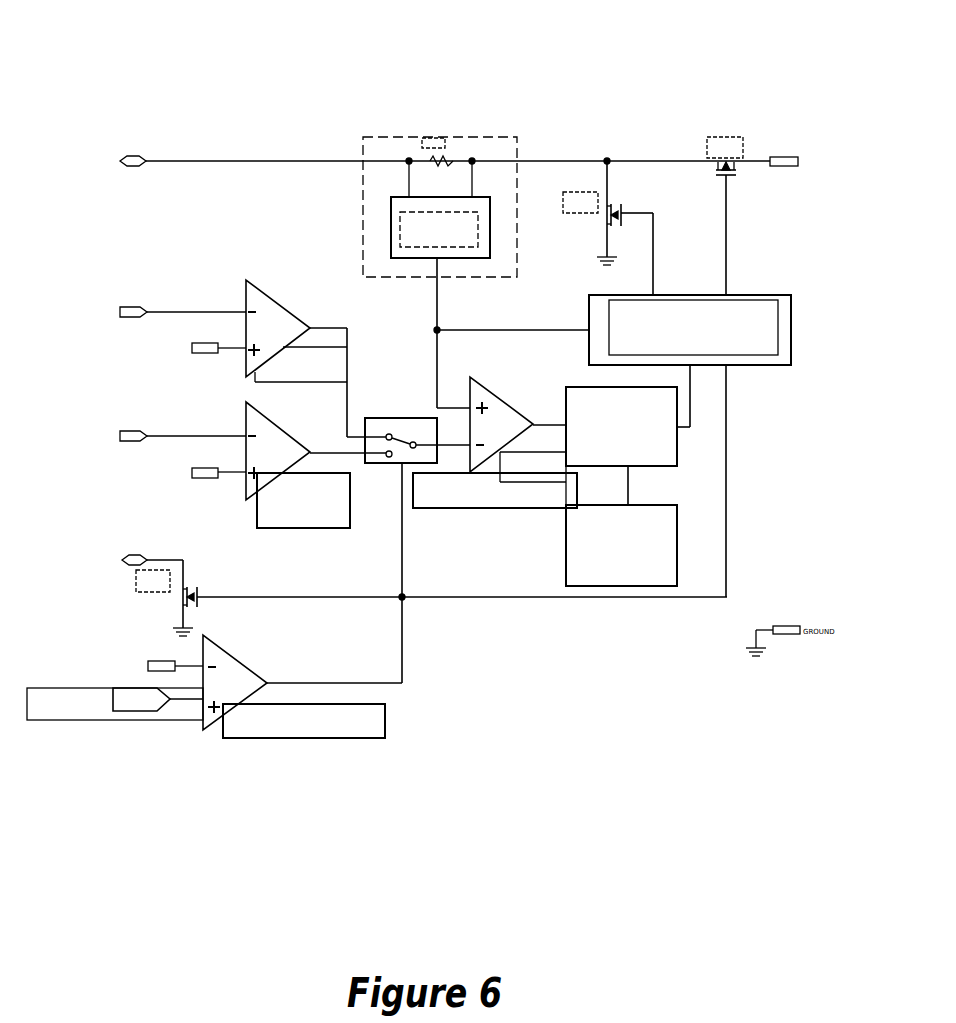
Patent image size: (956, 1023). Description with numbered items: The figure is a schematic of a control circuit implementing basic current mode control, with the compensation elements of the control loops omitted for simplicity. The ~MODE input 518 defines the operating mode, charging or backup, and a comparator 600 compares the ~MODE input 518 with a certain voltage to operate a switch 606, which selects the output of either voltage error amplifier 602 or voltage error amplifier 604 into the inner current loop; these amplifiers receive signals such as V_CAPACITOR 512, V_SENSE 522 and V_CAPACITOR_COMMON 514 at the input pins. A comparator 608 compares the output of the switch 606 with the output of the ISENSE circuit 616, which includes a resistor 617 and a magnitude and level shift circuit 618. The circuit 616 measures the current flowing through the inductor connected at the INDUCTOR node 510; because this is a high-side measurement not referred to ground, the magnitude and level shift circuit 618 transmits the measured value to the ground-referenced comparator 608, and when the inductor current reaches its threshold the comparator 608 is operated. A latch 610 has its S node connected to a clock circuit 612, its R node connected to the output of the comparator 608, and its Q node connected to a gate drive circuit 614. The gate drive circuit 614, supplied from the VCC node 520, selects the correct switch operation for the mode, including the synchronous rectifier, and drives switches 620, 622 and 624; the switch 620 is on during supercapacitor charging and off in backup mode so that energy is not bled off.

The INDUCTOR node 510 is at (135, 137).
The capacitor voltage input 512 is at (127, 280).
The capacitor common voltage input 514 is at (125, 535).
The ~MODE input 518 is at (172, 722).
The VCC supply input 520 is at (787, 137).
The sense voltage input 522 is at (136, 418).
The comparator 600 is at (245, 742).
The voltage error amplifier 602 is at (257, 500).
The voltage error amplifier 604 is at (247, 280).
The switch 606 is at (368, 408).
The comparator 608 is at (520, 376).
The latch 610 is at (655, 462).
The clock circuit 612 is at (573, 566).
The gate drive circuit 614 is at (743, 285).
The ISENSE circuit 616 is at (400, 127).
The resistor 617 is at (455, 148).
The magnitude and level shift circuit 618 is at (480, 222).
The switch 620 is at (200, 597).
The switch 622 is at (710, 168).
The switch 624 is at (597, 224).